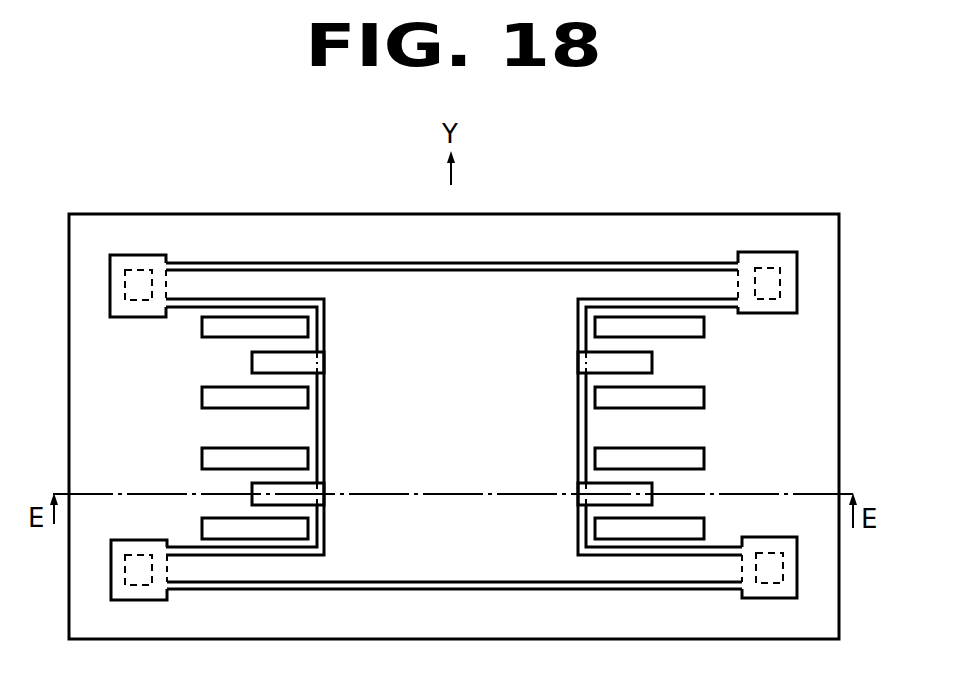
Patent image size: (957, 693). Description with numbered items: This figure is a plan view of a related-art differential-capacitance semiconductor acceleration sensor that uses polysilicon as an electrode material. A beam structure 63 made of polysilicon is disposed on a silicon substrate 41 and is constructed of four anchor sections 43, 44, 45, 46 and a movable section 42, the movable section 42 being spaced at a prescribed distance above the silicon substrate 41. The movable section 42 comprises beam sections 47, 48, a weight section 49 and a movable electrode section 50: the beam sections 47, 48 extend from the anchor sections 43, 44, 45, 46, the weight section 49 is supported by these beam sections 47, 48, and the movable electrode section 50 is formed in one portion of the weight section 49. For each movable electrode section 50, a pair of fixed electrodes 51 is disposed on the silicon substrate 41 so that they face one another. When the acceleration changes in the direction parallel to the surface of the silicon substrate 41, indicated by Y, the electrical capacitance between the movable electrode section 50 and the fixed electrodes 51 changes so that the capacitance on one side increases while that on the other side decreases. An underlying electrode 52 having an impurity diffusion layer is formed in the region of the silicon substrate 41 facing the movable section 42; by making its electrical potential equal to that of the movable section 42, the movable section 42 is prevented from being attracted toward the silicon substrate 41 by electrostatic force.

The silicon substrate 41 is at (830, 602).
The movable section 42 is at (487, 289).
The anchor section 43 is at (136, 268).
The anchor section 44 is at (772, 268).
The anchor section 45 is at (139, 590).
The anchor section 46 is at (768, 583).
The beam section 47 is at (452, 255).
The beam section 48 is at (613, 579).
The weight section 49 is at (570, 430).
The movable electrode section 50 is at (252, 363).
The fixed electrode 51 is at (200, 327).
The underlying electrode 52 is at (454, 610).
The beam structure 63 is at (452, 234).